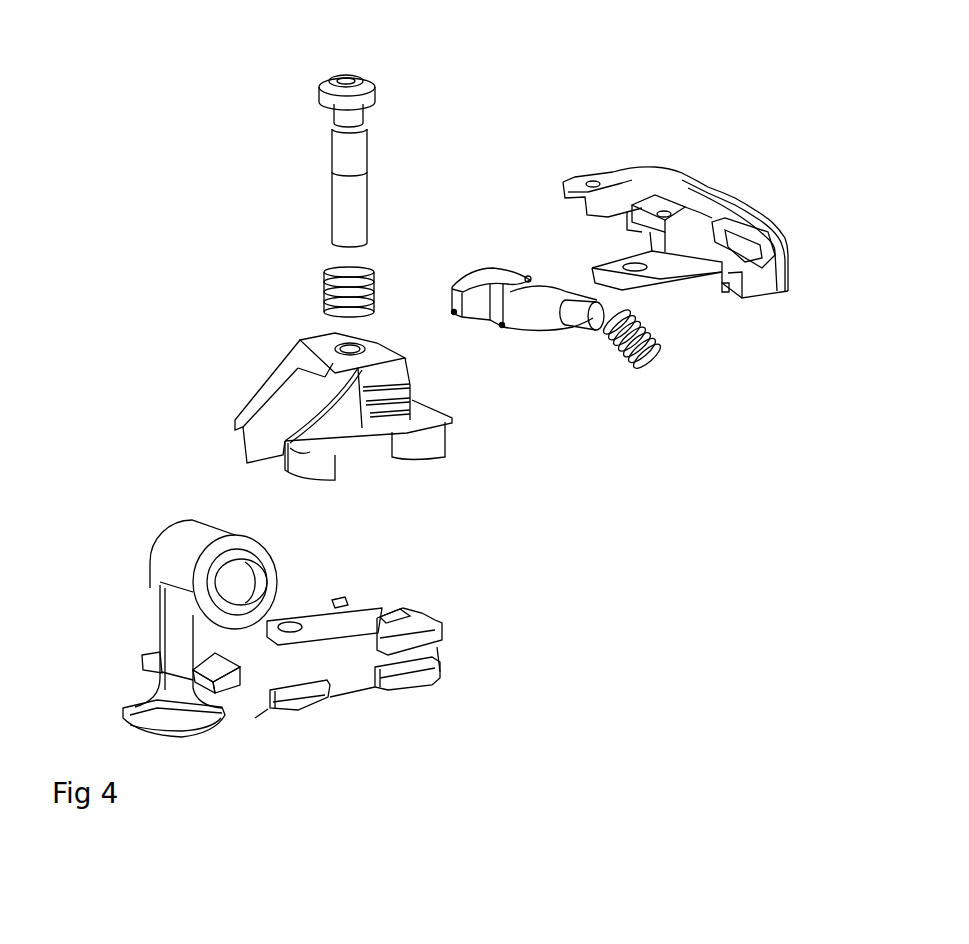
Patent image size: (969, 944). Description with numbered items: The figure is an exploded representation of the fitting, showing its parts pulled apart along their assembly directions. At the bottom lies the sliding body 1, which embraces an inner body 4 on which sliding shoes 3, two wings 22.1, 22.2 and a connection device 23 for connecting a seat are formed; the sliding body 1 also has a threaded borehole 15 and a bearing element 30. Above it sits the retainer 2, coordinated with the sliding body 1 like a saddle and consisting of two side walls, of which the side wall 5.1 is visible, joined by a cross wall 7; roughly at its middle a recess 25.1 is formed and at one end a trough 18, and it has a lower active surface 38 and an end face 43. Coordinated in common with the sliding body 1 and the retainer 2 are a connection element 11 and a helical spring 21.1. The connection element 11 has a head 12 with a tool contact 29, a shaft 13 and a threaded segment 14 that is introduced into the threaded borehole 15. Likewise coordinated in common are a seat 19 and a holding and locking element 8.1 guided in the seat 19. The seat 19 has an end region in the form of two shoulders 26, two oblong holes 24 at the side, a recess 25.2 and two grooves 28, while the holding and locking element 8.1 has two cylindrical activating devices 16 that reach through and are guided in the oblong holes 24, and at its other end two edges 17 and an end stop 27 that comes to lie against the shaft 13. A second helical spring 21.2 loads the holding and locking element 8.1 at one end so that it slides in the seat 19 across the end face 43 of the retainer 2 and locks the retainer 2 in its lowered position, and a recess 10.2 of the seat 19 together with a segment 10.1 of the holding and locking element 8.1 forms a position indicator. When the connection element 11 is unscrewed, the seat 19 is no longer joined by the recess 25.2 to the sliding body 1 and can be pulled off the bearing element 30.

The sliding body 1 is at (296, 665).
The retainer 2 is at (343, 405).
The sliding shoes 3 is at (196, 731).
The inner body 4 is at (255, 702).
The side wall 5.1 is at (275, 398).
The cross wall 7 is at (322, 365).
The holding and locking element 8.1 is at (538, 272).
The segment 10.1 is at (528, 276).
The recess 10.2 is at (678, 183).
The connection element 11 is at (363, 126).
The head 12 is at (320, 90).
The shaft 13 is at (337, 160).
The threaded segment 14 is at (344, 200).
The threaded borehole 15 is at (292, 622).
The cylindrical activating devices 16 is at (587, 321).
The edges 17 is at (454, 312).
The trough 18 is at (415, 387).
The seat 19 is at (693, 232).
The helical spring 21.1 is at (343, 283).
The helical spring 21.2 is at (658, 368).
The wing 22.1 is at (153, 655).
The wing 22.2 is at (424, 632).
The connection device 23 is at (177, 572).
The oblong holes 24 is at (743, 233).
The recess 25.1 is at (352, 345).
The recess 25.2 is at (632, 268).
The shoulders 26 is at (665, 213).
The end stop 27 is at (500, 280).
The grooves 28 is at (722, 290).
The tool contact 29 is at (343, 79).
The bearing element 30 is at (344, 600).
The lower active surface 38 is at (298, 453).
The end face 43 is at (323, 342).